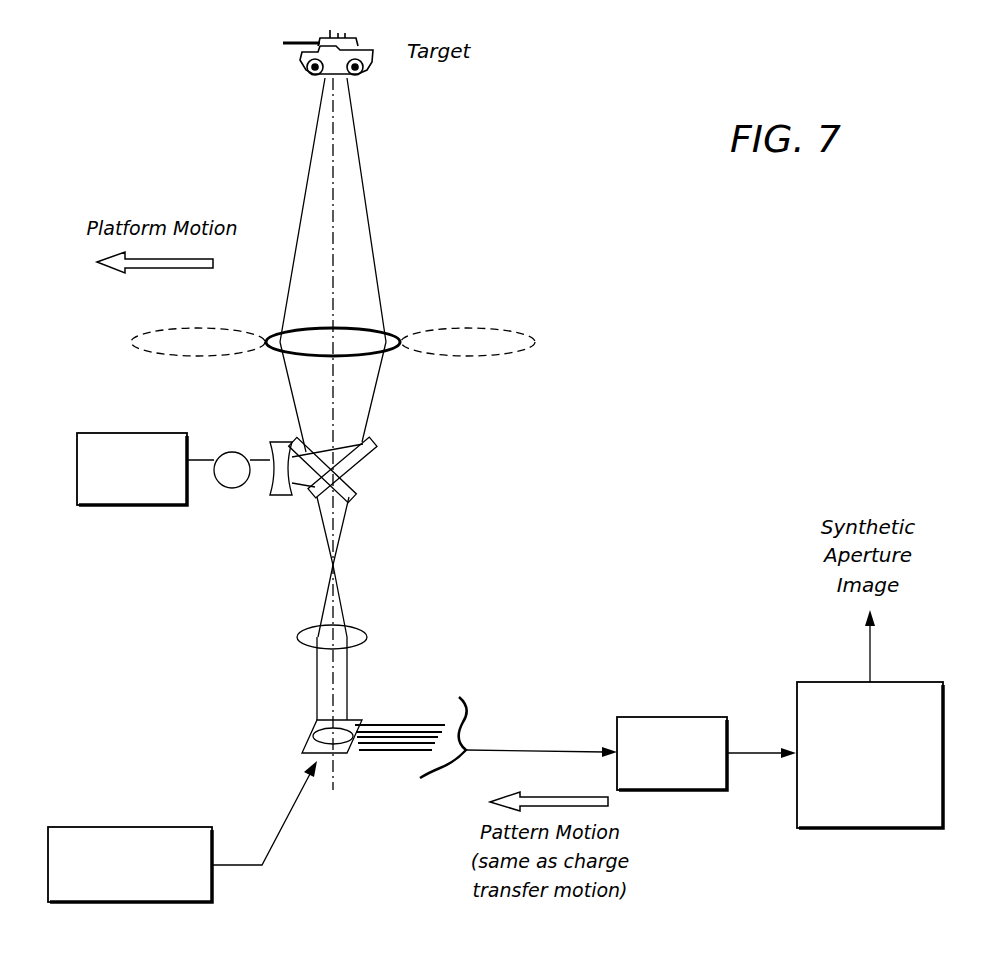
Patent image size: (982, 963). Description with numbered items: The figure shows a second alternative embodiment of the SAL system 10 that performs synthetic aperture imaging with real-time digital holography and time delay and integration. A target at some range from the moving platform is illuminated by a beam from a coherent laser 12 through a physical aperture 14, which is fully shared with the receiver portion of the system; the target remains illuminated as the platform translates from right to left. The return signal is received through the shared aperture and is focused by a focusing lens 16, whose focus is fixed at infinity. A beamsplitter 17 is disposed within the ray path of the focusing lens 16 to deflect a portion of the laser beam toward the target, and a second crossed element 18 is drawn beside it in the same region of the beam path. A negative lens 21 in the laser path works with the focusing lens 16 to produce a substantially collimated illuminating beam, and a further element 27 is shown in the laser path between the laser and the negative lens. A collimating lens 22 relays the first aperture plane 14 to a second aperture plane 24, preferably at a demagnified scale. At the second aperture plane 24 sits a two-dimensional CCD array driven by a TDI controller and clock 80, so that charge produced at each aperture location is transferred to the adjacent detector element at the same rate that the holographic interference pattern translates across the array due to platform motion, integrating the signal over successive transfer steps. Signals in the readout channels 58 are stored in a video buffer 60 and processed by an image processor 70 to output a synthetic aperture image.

The SAL system 10 is at (489, 240).
The coherent laser 12 is at (102, 433).
The physical aperture (first aperture plane) 14 is at (556, 340).
The focusing lens 16 is at (393, 342).
The beamsplitter 17 is at (365, 442).
The mirror / beam splitter 18 is at (352, 478).
The negative lens 21 is at (281, 442).
The collimating lens 22 is at (367, 636).
The second aperture plane 24 is at (272, 735).
The modulator 27 is at (232, 488).
The readout channels 58 is at (414, 692).
The video buffer 60 is at (640, 717).
The image processor 70 is at (823, 682).
The TDI controller and clock 80 is at (100, 827).